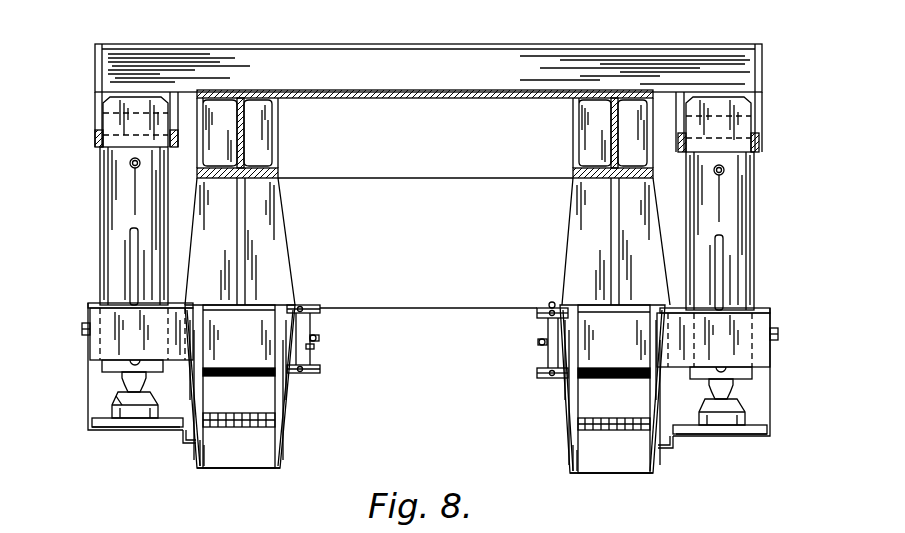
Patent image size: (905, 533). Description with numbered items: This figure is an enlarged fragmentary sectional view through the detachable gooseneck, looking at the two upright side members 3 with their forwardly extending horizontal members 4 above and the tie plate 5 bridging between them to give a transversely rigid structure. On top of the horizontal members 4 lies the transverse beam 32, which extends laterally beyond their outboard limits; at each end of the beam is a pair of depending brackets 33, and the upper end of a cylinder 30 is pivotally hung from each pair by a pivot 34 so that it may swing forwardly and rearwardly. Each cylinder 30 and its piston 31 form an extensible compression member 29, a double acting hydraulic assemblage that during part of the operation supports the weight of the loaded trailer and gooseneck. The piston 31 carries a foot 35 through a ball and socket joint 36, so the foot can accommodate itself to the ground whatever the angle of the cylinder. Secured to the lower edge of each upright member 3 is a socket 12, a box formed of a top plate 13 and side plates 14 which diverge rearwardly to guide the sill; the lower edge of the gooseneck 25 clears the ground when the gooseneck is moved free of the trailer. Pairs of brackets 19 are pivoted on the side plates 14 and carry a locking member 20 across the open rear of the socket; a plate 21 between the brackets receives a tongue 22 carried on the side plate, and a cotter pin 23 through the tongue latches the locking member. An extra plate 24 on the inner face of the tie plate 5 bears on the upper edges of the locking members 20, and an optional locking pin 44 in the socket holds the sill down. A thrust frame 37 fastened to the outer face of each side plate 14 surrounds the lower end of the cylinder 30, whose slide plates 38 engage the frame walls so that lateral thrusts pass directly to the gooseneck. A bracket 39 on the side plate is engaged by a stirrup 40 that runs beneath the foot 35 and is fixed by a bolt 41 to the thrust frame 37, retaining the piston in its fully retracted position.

The transverse beam 32 is at (362, 57).
The horizontal member 4 is at (256, 92).
The tie plate 5 is at (437, 100).
The depending bracket 33 is at (102, 95).
The pivot 34 is at (108, 124).
The cylinder 30 is at (112, 178).
The extensible compression member 29 is at (96, 196).
The upright side member 3 is at (276, 228).
The slide plate 38 is at (172, 315).
The thrust frame 37 is at (108, 341).
The bolt 41 is at (82, 330).
The piston 31 is at (128, 384).
The ball and socket joint 36 is at (118, 408).
The foot 35 is at (116, 423).
The stirrup 40 is at (143, 432).
The bracket 39 is at (187, 446).
The socket 12 is at (292, 445).
The lower edge of the gooseneck 25 is at (256, 468).
The locking member 20 is at (262, 333).
The locking pin 44 is at (234, 376).
The side plate 14 is at (194, 393).
The top plate 13 is at (270, 303).
The bracket 19 is at (320, 311).
The plate 21 is at (310, 326).
The tongue 22 is at (318, 338).
The cotter pin 23 is at (314, 348).
The extra plate 24 is at (406, 305).